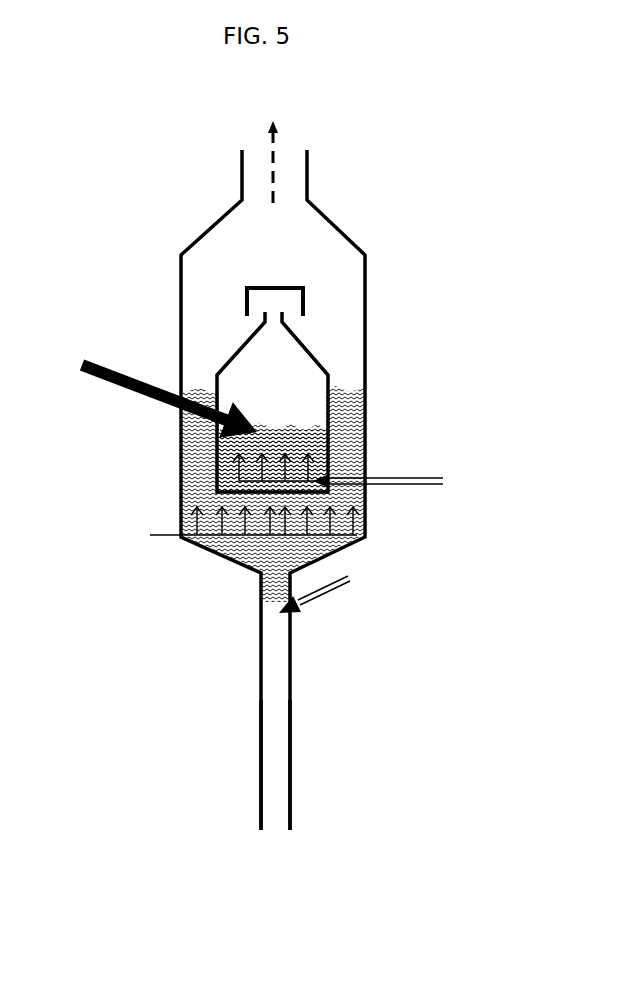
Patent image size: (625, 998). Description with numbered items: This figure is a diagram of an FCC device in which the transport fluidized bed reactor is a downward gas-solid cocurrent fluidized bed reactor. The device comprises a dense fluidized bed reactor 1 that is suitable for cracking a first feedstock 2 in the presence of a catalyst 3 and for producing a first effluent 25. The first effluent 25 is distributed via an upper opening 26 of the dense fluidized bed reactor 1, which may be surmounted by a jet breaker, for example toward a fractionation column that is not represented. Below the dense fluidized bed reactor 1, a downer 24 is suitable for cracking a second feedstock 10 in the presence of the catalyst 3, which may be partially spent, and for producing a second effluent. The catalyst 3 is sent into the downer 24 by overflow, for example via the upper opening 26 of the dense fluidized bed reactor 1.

The dense fluidized bed reactor 1 is at (223, 362).
The first feedstock 2 is at (390, 488).
The catalyst 3 is at (127, 388).
The second feedstock 10 is at (333, 595).
The downer 24 is at (290, 687).
The first effluent 25 is at (273, 147).
The upper opening 26 is at (290, 302).